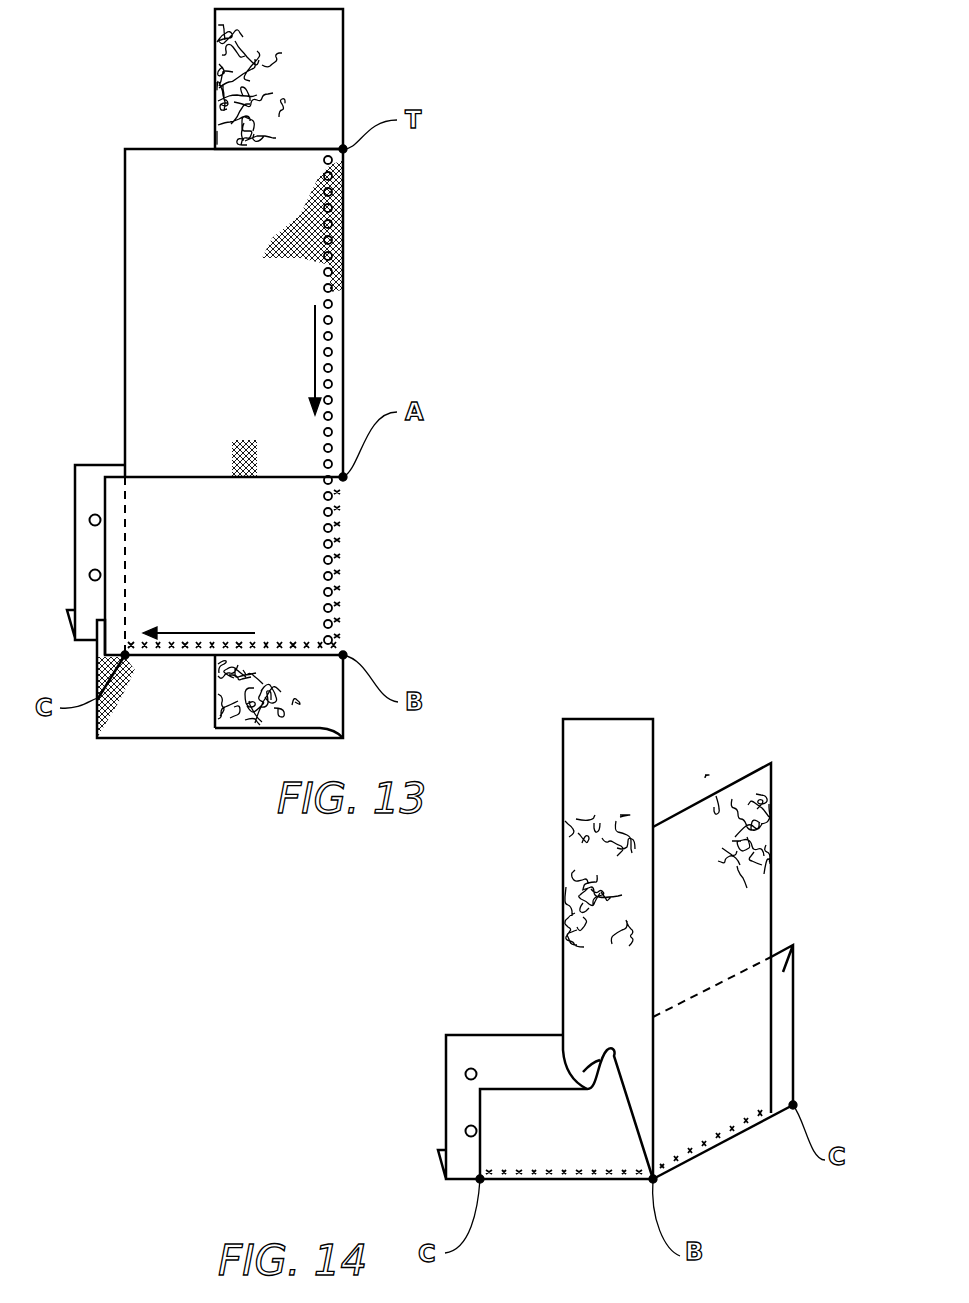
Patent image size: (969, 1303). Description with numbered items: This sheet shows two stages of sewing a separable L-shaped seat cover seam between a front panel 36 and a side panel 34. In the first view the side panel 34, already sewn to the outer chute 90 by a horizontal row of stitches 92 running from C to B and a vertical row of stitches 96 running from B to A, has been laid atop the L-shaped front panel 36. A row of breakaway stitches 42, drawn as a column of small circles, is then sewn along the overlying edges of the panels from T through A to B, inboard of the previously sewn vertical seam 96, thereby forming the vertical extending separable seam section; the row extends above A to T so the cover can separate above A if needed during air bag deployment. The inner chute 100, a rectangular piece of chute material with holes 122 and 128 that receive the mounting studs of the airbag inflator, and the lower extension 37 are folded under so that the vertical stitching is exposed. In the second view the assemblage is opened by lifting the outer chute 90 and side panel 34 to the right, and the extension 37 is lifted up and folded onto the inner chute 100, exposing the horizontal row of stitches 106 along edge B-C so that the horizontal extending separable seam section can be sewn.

In FIG. 13, the side panel 34 is at (155, 268).
In FIG. 14, the side panel 34 is at (725, 850).
In FIG. 13, the front panel 36 is at (322, 98).
In FIG. 14, the front panel 36 is at (598, 790).
In FIG. 13, the lower extension 37 is at (205, 705).
In FIG. 14, the lower extension 37 is at (500, 1143).
In FIG. 13, the breakaway stitches 42 is at (328, 352).
In FIG. 13, the outer chute 90 is at (297, 563).
In FIG. 14, the outer chute 90 is at (793, 945).
In FIG. 13, the horizontal row of stitches 92 is at (295, 643).
In FIG. 14, the horizontal row of stitches 92 is at (730, 1140).
In FIG. 13, the vertical row of stitches 96 is at (338, 597).
In FIG. 13, the inner chute 100 is at (93, 477).
In FIG. 14, the inner chute 100 is at (503, 1060).
In FIG. 14, the horizontal row of stitches 106 is at (580, 1180).
In FIG. 13, the hole 122 is at (82, 575).
In FIG. 14, the hole 122 is at (455, 1131).
In FIG. 13, the hole 128 is at (89, 508).
In FIG. 14, the hole 128 is at (468, 1060).